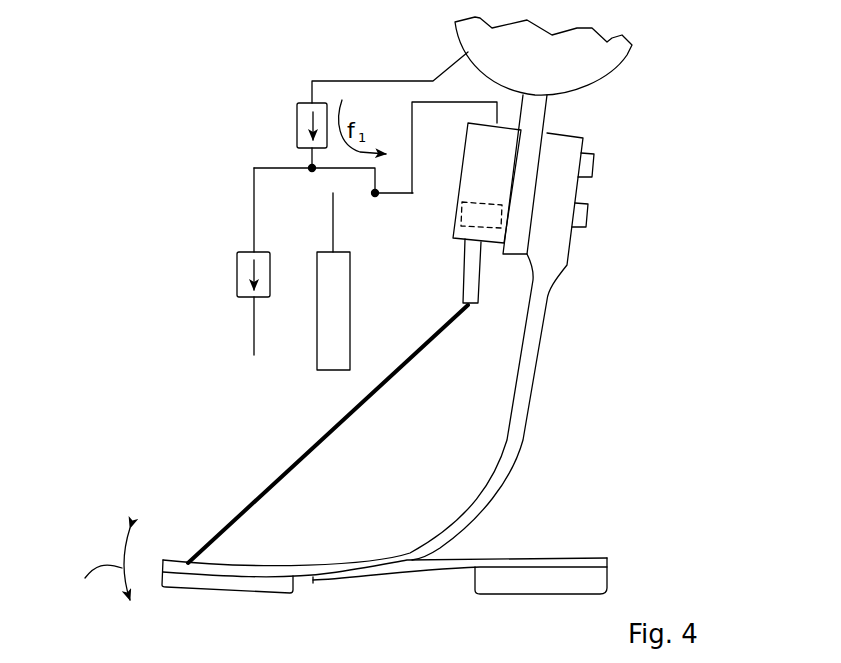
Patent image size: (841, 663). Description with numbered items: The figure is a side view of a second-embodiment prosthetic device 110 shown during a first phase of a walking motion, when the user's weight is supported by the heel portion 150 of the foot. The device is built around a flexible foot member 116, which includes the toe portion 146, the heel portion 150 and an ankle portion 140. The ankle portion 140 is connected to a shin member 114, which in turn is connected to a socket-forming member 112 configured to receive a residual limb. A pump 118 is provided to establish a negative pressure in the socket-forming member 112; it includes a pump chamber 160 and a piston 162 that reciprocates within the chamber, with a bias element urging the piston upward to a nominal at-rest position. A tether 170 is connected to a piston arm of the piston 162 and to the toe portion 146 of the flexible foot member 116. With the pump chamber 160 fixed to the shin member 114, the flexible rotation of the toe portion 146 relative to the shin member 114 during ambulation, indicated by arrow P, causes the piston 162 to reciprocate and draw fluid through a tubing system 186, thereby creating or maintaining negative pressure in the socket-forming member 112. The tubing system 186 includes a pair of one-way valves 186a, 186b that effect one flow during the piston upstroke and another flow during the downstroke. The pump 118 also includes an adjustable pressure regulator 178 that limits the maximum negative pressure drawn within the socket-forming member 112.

The prosthetic device 110 is at (688, 212).
The socket-forming member 112 is at (610, 52).
The shin member 114 is at (541, 122).
The flexible foot member 116 is at (399, 574).
The pump 118 is at (459, 191).
The ankle portion 140 is at (547, 265).
The toe portion 146 is at (183, 580).
The heel portion 150 is at (550, 582).
The pump chamber 160 is at (478, 167).
The piston 162 is at (462, 242).
The tether 170 is at (317, 448).
The pressure regulator 178 is at (335, 337).
The tubing system 186 is at (300, 203).
The one-way valve 186a is at (297, 133).
The one-way valve 186b is at (237, 278).